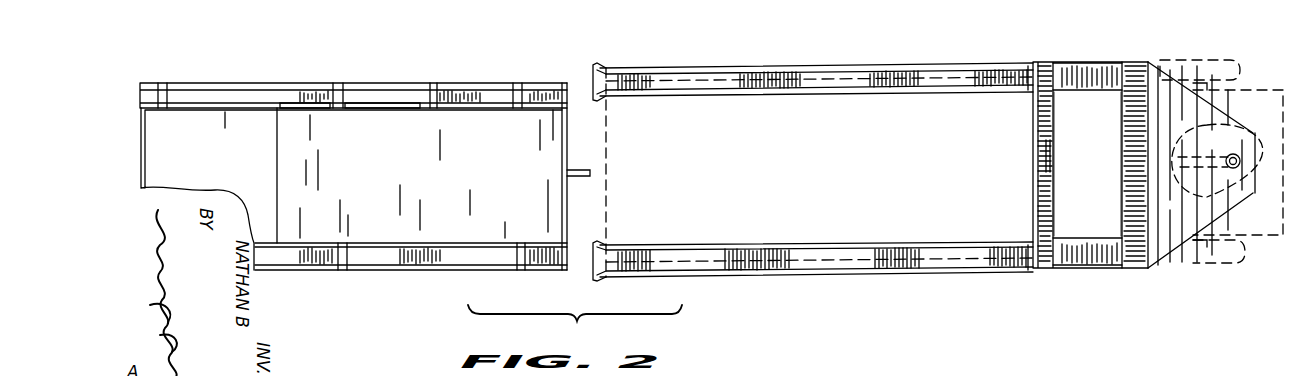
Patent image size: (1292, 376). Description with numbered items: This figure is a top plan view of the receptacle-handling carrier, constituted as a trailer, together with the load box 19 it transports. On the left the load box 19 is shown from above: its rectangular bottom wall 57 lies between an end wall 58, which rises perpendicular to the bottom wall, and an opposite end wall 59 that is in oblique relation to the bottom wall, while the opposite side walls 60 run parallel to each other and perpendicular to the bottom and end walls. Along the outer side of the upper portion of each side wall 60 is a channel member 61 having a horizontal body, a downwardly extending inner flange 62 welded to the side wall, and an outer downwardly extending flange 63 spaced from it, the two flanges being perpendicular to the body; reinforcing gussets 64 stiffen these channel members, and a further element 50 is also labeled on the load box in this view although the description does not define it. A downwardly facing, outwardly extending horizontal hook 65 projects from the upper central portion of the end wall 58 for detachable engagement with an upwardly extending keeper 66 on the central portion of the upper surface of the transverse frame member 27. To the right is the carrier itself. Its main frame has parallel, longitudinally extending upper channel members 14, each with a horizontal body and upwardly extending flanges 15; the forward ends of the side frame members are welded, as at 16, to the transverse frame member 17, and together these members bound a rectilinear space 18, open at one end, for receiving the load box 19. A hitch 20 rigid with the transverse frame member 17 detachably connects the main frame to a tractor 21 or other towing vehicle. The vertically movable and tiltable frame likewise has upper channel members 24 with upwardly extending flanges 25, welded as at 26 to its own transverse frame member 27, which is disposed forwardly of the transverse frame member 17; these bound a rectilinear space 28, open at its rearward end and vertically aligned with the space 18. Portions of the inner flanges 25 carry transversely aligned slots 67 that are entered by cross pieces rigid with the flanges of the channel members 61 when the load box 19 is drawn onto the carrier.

The upper channel member 14 is at (1097, 68).
The flange 15 is at (1080, 62).
The weld 16 is at (1120, 77).
The transverse frame member 17 is at (1130, 187).
The rectilinear space 18 is at (1100, 139).
The load box 19 is at (496, 153).
The hitch 20 is at (1187, 220).
The tractor 21 is at (1273, 228).
The upper channel member 24 is at (903, 80).
The flange 25 is at (968, 63).
The weld 26 is at (1032, 80).
The transverse frame member 27 is at (1038, 135).
The rectilinear space 28 is at (820, 157).
The lower rail 50 is at (417, 243).
The bottom wall 57 is at (423, 174).
The end wall 58 is at (587, 148).
The opposite end wall 59 is at (220, 153).
The side wall 60 is at (378, 108).
The channel member 61 is at (432, 84).
The inner flange 62 is at (303, 109).
The outer flange 63 is at (320, 84).
The reinforcing gusset 64 is at (162, 102).
The hook 65 is at (587, 177).
The keeper 66 is at (1050, 148).
The slot 67 is at (625, 98).